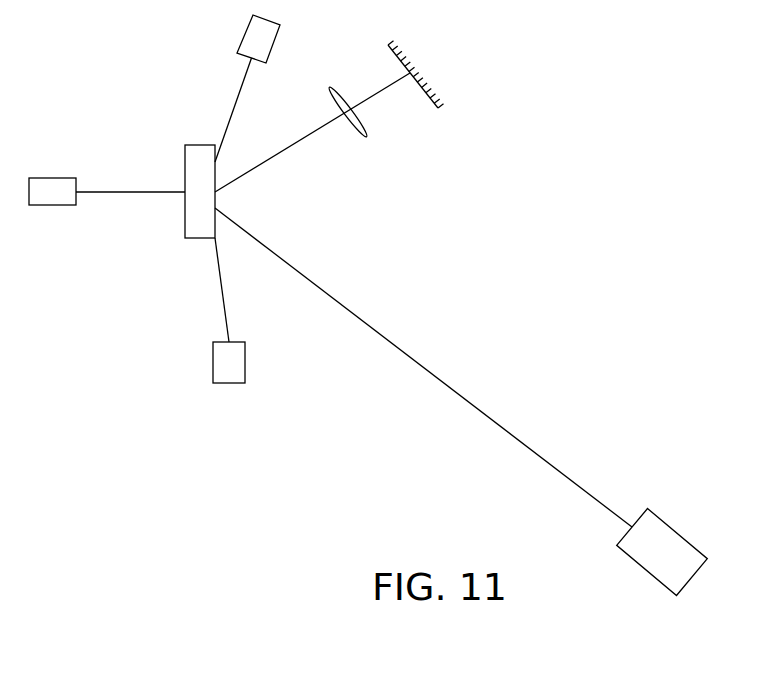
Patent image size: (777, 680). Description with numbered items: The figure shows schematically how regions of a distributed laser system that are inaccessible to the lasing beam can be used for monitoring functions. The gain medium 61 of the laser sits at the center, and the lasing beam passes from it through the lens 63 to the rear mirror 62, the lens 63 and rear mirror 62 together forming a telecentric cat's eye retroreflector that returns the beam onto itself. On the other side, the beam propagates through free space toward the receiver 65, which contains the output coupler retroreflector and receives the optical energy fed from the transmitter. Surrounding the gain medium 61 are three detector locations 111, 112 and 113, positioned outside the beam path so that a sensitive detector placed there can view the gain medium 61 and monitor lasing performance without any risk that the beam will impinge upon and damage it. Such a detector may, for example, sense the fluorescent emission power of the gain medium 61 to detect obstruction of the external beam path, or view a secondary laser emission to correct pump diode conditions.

The gain medium 61 is at (200, 239).
The rear mirror 62 is at (440, 108).
The lens 63 is at (367, 137).
The receiver 65 is at (680, 532).
The detector location 111 is at (213, 366).
The detector location 112 is at (57, 206).
The detector location 113 is at (247, 32).